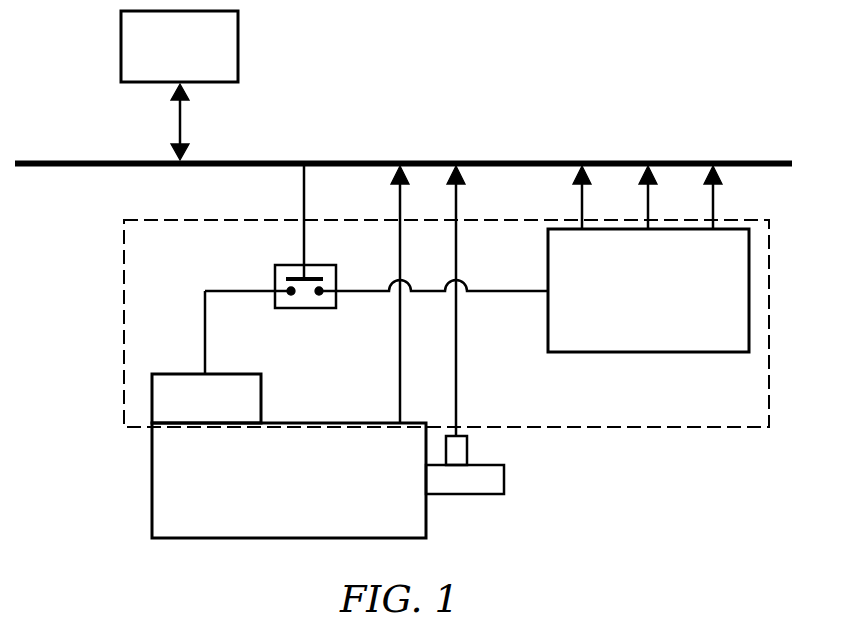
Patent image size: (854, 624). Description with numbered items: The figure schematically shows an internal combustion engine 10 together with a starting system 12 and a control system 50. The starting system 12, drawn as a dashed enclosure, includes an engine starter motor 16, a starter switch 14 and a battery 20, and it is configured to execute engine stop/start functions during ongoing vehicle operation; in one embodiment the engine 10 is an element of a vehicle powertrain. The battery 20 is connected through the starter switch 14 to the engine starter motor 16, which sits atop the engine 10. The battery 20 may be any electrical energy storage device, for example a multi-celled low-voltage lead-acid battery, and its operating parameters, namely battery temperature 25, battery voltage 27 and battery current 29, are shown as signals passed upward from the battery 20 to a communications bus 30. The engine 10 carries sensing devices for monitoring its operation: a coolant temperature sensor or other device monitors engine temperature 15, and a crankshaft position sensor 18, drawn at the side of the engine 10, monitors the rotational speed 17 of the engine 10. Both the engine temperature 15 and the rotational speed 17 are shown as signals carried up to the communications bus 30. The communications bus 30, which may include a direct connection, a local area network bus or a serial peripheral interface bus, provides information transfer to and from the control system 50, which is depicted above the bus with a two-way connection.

The internal combustion engine 10 is at (289, 480).
The starting system 12 is at (124, 313).
The starter switch 14 is at (304, 309).
The engine temperature 15 is at (390, 294).
The engine starter motor 16 is at (213, 357).
The rotational speed 17 is at (468, 301).
The crankshaft position sensor 18 is at (467, 447).
The battery 20 is at (648, 290).
The battery temperature 25 is at (594, 197).
The battery voltage 27 is at (660, 197).
The battery current 29 is at (725, 197).
The communications bus 30 is at (88, 167).
The control system 50 is at (179, 85).